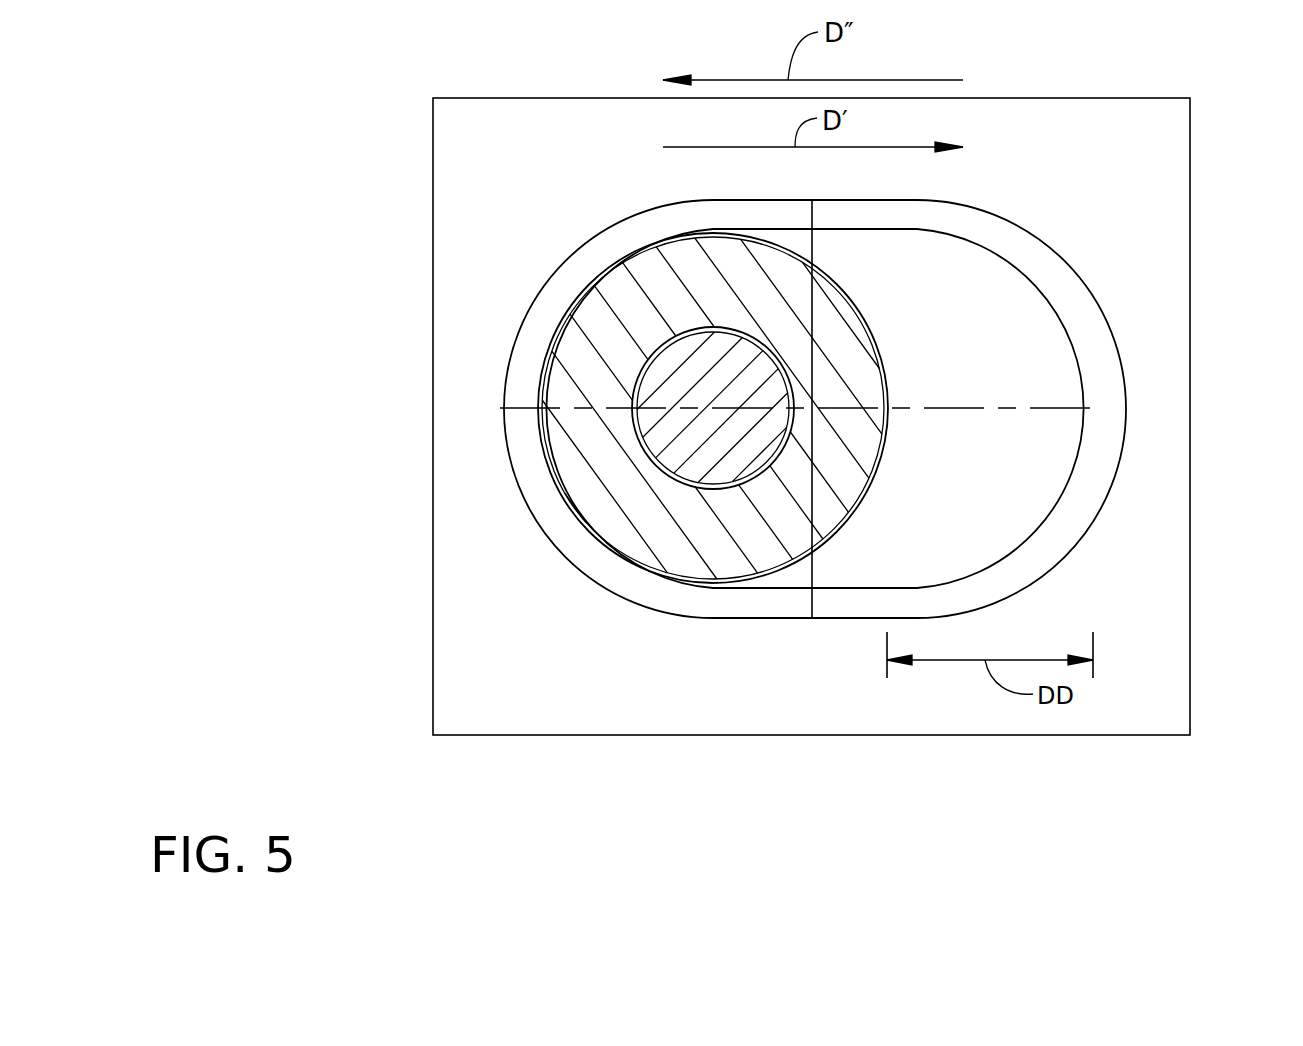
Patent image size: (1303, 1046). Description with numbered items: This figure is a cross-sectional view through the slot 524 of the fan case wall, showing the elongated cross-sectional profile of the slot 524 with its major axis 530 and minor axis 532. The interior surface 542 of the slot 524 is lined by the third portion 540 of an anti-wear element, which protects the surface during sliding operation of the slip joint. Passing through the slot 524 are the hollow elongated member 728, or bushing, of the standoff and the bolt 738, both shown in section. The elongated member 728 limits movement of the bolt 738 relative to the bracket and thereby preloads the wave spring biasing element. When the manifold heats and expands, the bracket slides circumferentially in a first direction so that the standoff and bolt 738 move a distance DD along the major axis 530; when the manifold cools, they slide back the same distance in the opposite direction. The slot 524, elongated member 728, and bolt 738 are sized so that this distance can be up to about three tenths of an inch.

The slot 524 is at (804, 380).
The major axis 530 is at (1028, 408).
The minor axis 532 is at (812, 238).
The third portion 540 is at (1035, 560).
The interior surface 542 is at (563, 258).
The elongated member 728 is at (638, 502).
The bolt 738 is at (707, 427).